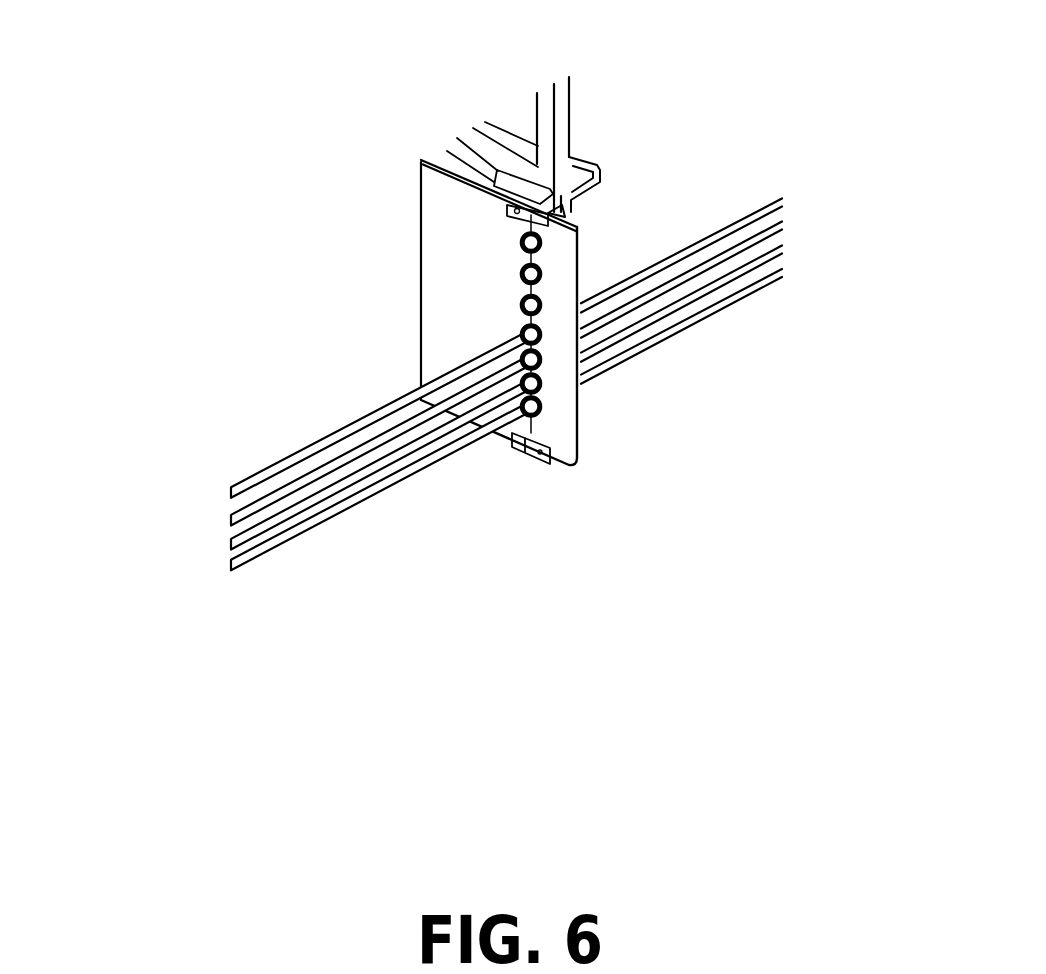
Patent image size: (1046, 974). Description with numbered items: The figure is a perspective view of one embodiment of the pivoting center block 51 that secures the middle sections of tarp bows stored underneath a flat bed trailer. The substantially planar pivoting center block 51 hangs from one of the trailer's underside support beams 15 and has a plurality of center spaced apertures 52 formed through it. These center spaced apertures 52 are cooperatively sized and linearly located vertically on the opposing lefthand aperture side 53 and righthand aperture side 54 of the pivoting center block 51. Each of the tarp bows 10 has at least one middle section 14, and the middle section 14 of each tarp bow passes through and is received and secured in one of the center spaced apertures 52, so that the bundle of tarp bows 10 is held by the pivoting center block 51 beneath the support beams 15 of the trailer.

The tarp bows 10 is at (205, 528).
The middle section 14 is at (345, 392).
The underside support beams 15 is at (560, 128).
The pivoting center block 51 is at (533, 472).
The center spaced apertures 52 is at (541, 242).
The lefthand aperture side 53 is at (555, 458).
The righthand aperture side 54 is at (550, 402).